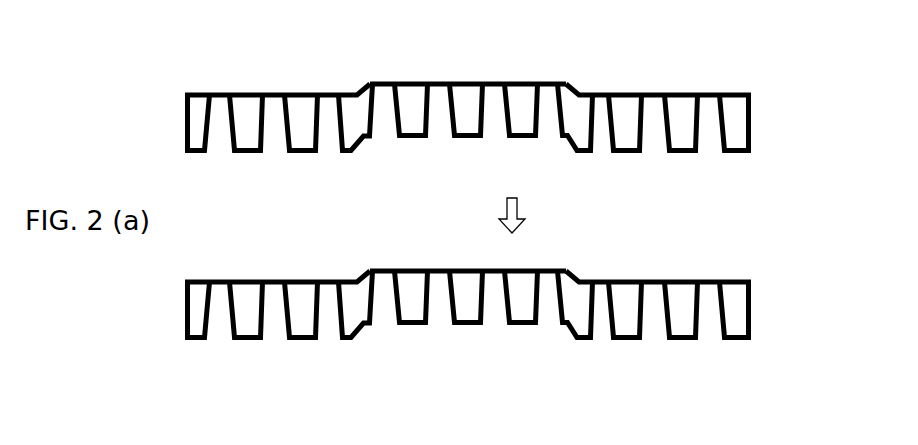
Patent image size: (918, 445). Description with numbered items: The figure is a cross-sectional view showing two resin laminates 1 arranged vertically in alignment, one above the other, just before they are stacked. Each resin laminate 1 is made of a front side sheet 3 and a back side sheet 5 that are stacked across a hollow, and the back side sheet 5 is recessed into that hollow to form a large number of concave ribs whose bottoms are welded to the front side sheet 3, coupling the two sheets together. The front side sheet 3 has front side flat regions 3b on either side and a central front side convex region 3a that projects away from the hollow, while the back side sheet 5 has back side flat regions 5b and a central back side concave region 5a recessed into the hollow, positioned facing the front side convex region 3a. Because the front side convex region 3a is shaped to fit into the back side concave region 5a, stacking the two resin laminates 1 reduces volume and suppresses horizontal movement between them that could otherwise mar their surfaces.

The resin laminate 1 is at (765, 52).
The front side sheet 3 is at (751, 92).
The front side convex region 3a is at (577, 75).
The front side flat regions 3b is at (353, 92).
The back side sheet 5 is at (748, 150).
The back side concave region 5a is at (577, 162).
The back side flat regions 5b is at (347, 162).